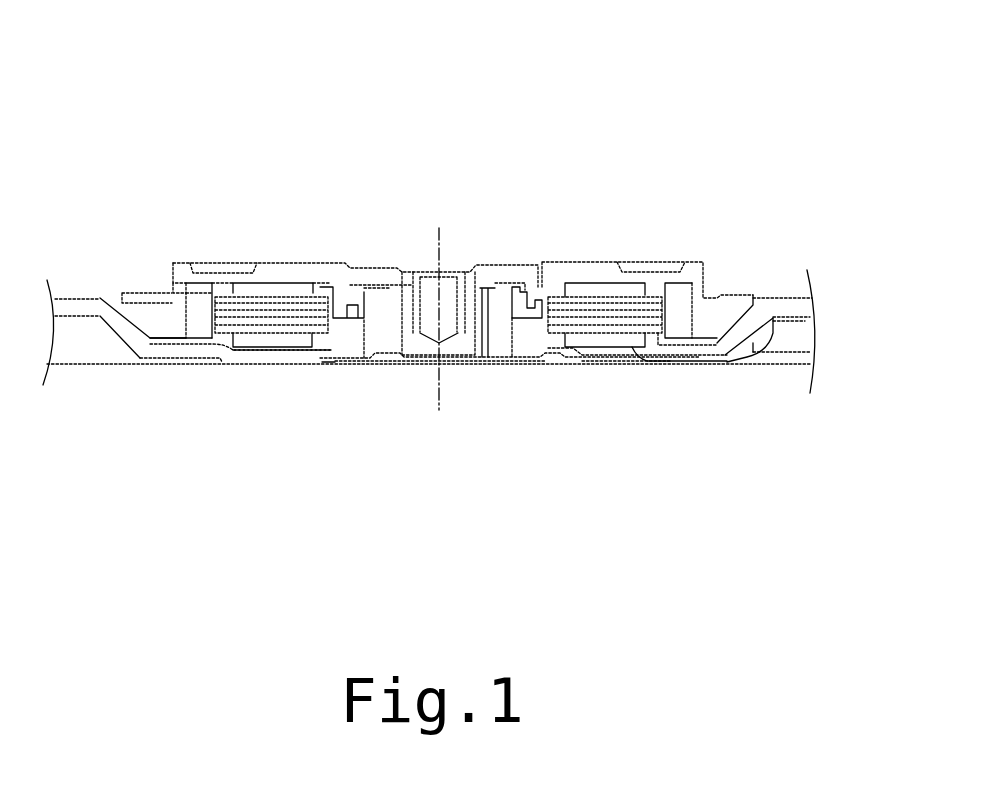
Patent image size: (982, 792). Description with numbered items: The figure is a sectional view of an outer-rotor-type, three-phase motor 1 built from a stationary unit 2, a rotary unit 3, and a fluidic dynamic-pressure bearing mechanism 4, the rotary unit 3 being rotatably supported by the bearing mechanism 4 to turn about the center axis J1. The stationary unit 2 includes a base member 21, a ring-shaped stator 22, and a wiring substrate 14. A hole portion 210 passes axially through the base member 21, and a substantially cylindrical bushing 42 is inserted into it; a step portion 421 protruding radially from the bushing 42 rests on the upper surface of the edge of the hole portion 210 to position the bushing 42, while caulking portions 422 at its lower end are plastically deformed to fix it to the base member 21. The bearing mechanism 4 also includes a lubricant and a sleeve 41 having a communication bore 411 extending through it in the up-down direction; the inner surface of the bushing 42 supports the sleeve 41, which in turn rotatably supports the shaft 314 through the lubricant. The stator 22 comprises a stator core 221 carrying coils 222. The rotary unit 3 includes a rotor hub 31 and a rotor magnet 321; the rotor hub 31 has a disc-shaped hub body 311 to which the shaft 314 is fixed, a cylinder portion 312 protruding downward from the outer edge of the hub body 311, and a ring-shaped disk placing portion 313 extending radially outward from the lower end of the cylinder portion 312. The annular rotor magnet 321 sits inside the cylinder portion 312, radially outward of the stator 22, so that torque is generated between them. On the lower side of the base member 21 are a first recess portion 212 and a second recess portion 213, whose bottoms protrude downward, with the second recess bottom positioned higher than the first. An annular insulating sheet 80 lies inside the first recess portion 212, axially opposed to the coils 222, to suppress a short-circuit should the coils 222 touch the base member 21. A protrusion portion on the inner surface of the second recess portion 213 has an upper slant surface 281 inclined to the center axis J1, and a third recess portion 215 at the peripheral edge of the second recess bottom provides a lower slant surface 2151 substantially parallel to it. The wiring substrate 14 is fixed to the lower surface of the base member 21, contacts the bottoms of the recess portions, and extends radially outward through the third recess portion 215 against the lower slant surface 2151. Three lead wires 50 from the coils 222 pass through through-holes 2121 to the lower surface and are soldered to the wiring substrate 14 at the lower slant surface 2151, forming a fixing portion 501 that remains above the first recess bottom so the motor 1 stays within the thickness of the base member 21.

The motor 1 is at (92, 48).
The stationary unit 2 is at (267, 494).
The base member 21 is at (65, 297).
The hole portion 210 is at (512, 363).
The first recess portion 212 is at (312, 348).
The through-holes 2121 is at (583, 363).
The second recess portion 213 is at (182, 340).
The third recess portion 215 is at (780, 348).
The lower slant surface 2151 is at (759, 325).
The stator 22 is at (577, 250).
The stator core 221 is at (237, 300).
The coils 222 is at (274, 288).
The rotary unit 3 is at (308, 113).
The rotor hub 31 is at (317, 263).
The hub body 311 is at (583, 268).
The cylinder portion 312 is at (173, 291).
The disk placing portion 313 is at (133, 292).
The shaft 314 is at (412, 292).
The rotor magnet 321 is at (198, 297).
The bearing mechanism 4 is at (388, 494).
The sleeve 41 is at (390, 300).
The bushing 42 is at (348, 327).
The step portion 421 is at (323, 345).
The caulking portions 422 is at (332, 365).
The communication bore 411 is at (485, 289).
The lead wires 50 is at (677, 362).
The fixing portion 501 is at (754, 347).
The insulating sheet 80 is at (243, 347).
The wiring substrate 14 is at (795, 320).
The upper slant surface 281 is at (755, 303).
The center axis J1 is at (441, 234).